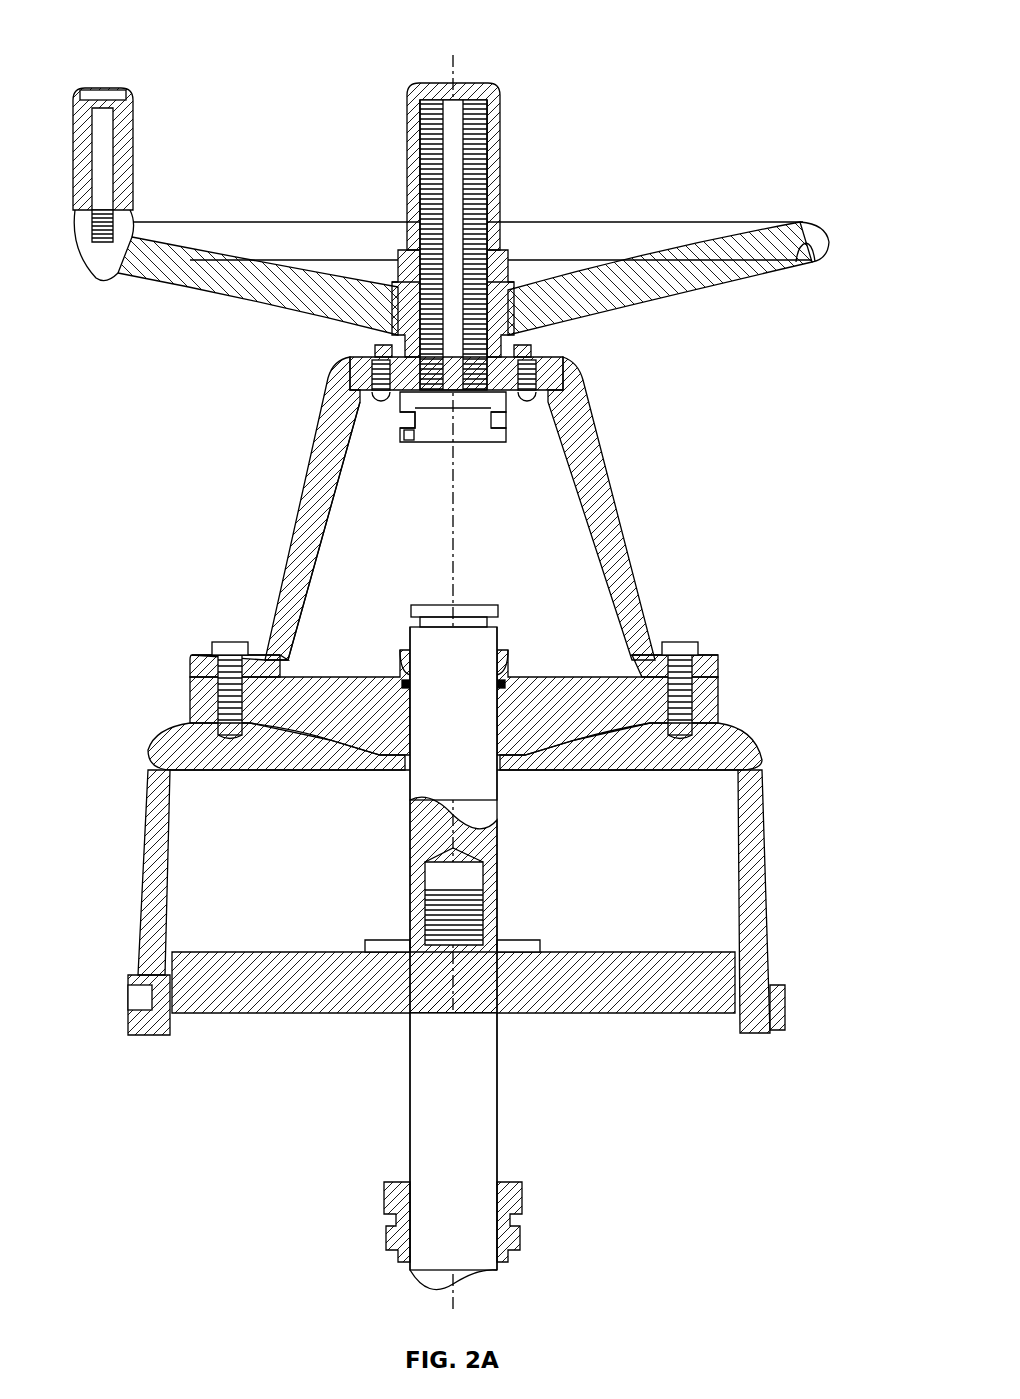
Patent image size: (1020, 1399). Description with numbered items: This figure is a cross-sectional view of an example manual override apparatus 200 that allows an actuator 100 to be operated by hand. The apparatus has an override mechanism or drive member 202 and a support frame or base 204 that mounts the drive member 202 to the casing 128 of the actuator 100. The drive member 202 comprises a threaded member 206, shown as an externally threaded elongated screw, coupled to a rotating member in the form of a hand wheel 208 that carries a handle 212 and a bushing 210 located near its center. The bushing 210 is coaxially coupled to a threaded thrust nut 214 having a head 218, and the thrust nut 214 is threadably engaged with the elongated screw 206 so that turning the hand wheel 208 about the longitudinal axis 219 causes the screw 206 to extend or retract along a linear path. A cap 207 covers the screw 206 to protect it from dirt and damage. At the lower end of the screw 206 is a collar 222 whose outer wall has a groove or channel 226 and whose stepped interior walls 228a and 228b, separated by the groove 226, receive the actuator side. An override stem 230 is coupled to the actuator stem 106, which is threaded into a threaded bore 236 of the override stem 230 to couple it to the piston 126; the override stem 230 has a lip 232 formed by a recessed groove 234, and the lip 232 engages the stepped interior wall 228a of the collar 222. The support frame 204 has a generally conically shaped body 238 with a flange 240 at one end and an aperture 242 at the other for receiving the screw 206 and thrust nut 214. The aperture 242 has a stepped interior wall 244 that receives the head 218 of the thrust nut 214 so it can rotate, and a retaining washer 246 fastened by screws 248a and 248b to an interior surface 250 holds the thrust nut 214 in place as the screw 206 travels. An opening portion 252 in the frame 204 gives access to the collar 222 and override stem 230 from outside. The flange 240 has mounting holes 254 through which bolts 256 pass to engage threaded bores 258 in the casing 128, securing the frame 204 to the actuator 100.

The actuator 100 is at (136, 1058).
The actuator stem 106 is at (410, 1097).
The piston 126 is at (606, 1008).
The casing 128 is at (770, 850).
The manual override apparatus 200 is at (516, 42).
The override mechanism or drive member 202 is at (488, 215).
The support frame or base 204 is at (507, 517).
The threaded member 206 is at (488, 160).
The cap 207 is at (406, 112).
The rotating member 208 is at (830, 240).
The bushing 210 is at (396, 282).
The handle 212 is at (136, 140).
The threaded thrust nut 214 is at (512, 262).
The head 218 is at (390, 354).
The longitudinal axis 219 is at (450, 72).
The collar 222 is at (520, 404).
The groove or channel 226 is at (562, 455).
The stepped interior wall 228a is at (428, 404).
The stepped interior wall 228b is at (418, 412).
The cylindrical member or override stem 230 is at (500, 812).
The lip 232 is at (498, 608).
The recessed groove 234 is at (498, 624).
The threaded bore 236 is at (422, 892).
The conically shaped body 238 is at (616, 572).
The flange 240 is at (722, 680).
The aperture 242 is at (502, 350).
The stepped interior wall 244 is at (546, 372).
The retaining washer 246 is at (402, 414).
The screw 248a is at (376, 390).
The screw 248b is at (536, 393).
The interior surface 250 is at (454, 517).
The opening portion 252 is at (423, 577).
The mounting holes 254 is at (212, 690).
The bolts 256 is at (230, 642).
The threaded bores 258 is at (228, 735).